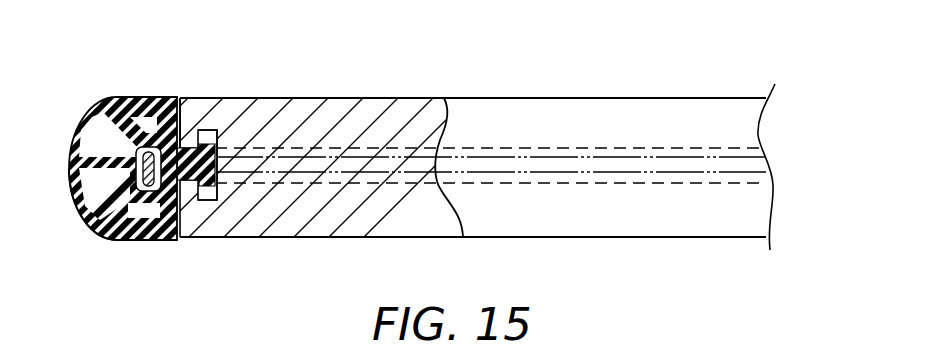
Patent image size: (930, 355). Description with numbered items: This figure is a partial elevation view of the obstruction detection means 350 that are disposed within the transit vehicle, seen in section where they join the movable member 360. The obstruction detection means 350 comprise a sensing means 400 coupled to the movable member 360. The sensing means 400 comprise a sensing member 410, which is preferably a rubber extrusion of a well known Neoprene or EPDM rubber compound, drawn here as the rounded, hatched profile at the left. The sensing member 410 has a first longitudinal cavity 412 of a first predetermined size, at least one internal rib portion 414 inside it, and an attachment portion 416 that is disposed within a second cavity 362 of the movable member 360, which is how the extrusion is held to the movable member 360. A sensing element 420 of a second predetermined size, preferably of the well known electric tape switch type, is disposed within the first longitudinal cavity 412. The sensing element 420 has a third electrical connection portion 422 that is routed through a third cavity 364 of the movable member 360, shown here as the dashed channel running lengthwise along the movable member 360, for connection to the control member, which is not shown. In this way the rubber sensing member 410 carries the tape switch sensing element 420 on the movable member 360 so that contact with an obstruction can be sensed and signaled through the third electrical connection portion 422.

The obstruction detection means 350 is at (80, 111).
The movable member 360 is at (601, 82).
The second cavity 362 is at (217, 196).
The third cavity 364 is at (368, 182).
The sensing means 400 is at (73, 215).
The sensing member 410 is at (103, 230).
The first longitudinal cavity 412 is at (185, 198).
The internal rib portion 414 is at (100, 158).
The attachment portion 416 is at (214, 130).
The sensing element 420 is at (186, 125).
The third electrical connection portion 422 is at (344, 150).